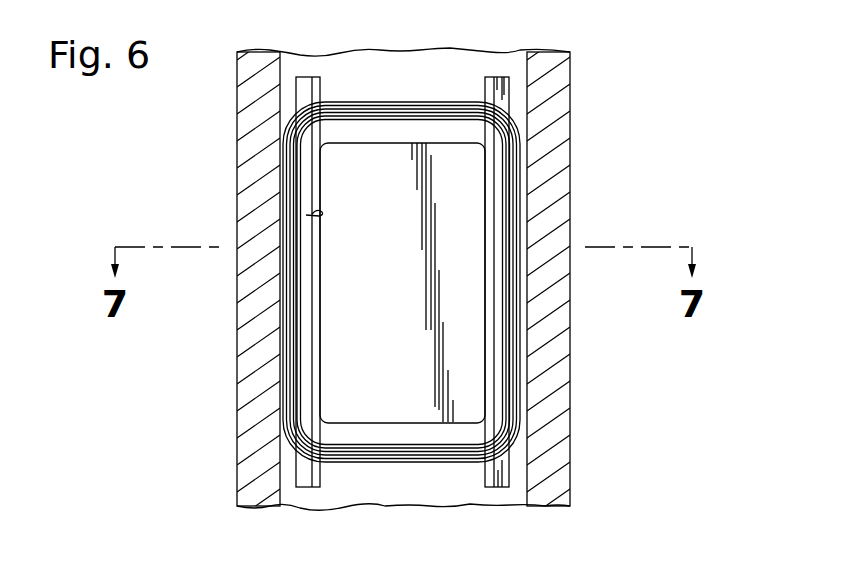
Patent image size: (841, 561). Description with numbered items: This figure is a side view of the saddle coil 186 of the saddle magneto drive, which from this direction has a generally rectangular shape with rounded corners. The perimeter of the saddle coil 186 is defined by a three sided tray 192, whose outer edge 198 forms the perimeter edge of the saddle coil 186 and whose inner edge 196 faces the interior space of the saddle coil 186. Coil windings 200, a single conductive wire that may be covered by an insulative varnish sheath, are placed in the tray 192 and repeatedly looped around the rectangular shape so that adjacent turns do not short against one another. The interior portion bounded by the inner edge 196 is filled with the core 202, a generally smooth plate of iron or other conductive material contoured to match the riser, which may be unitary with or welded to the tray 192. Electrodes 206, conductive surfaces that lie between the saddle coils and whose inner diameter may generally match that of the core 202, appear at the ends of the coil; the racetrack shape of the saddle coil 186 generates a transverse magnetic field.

The saddle coil 186 is at (640, 90).
The tray 192 is at (520, 162).
The inner edge 196 is at (306, 215).
The outer edge 198 is at (290, 163).
The coil windings 200 is at (297, 403).
The core 202 is at (463, 323).
The electrodes 206 is at (297, 473).